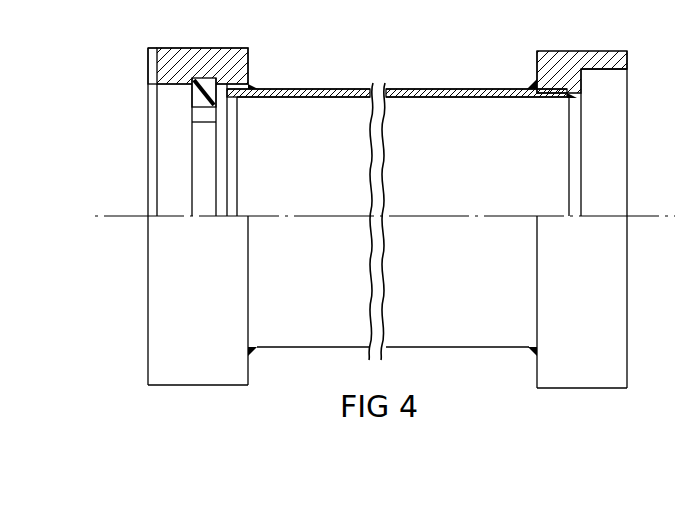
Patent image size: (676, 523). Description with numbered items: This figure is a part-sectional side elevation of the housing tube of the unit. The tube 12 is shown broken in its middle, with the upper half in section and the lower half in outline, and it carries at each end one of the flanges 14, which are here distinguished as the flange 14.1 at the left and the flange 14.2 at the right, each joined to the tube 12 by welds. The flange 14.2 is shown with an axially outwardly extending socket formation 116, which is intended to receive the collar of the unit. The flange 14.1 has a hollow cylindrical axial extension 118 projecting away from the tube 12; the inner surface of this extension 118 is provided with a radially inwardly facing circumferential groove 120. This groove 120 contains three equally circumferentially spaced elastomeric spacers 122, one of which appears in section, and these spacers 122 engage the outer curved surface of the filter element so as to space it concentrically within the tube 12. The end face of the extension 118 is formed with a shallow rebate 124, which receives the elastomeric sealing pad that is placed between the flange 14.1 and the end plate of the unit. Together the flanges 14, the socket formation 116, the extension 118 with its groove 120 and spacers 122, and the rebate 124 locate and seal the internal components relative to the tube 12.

The tube 12 is at (441, 78).
The flanges 14 is at (231, 320).
The flange 14.1 is at (252, 42).
The flange 14.2 is at (565, 36).
The socket formation 116 is at (604, 66).
The hollow cylindrical axial extension 118 is at (232, 72).
The circumferential groove 120 is at (195, 72).
The elastomeric spacers 122 is at (191, 96).
The shallow rebate 124 is at (151, 82).